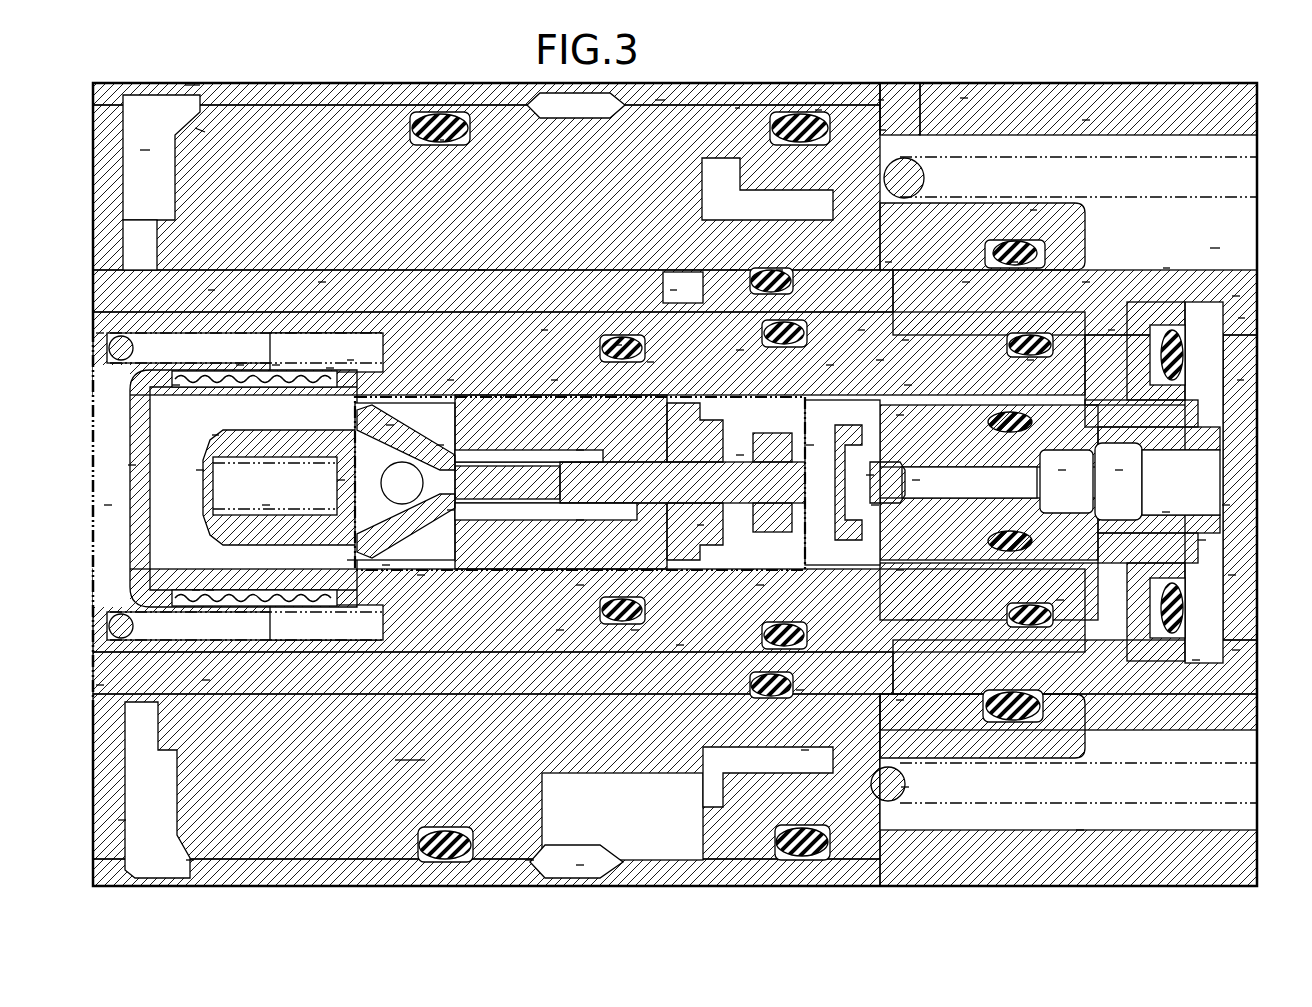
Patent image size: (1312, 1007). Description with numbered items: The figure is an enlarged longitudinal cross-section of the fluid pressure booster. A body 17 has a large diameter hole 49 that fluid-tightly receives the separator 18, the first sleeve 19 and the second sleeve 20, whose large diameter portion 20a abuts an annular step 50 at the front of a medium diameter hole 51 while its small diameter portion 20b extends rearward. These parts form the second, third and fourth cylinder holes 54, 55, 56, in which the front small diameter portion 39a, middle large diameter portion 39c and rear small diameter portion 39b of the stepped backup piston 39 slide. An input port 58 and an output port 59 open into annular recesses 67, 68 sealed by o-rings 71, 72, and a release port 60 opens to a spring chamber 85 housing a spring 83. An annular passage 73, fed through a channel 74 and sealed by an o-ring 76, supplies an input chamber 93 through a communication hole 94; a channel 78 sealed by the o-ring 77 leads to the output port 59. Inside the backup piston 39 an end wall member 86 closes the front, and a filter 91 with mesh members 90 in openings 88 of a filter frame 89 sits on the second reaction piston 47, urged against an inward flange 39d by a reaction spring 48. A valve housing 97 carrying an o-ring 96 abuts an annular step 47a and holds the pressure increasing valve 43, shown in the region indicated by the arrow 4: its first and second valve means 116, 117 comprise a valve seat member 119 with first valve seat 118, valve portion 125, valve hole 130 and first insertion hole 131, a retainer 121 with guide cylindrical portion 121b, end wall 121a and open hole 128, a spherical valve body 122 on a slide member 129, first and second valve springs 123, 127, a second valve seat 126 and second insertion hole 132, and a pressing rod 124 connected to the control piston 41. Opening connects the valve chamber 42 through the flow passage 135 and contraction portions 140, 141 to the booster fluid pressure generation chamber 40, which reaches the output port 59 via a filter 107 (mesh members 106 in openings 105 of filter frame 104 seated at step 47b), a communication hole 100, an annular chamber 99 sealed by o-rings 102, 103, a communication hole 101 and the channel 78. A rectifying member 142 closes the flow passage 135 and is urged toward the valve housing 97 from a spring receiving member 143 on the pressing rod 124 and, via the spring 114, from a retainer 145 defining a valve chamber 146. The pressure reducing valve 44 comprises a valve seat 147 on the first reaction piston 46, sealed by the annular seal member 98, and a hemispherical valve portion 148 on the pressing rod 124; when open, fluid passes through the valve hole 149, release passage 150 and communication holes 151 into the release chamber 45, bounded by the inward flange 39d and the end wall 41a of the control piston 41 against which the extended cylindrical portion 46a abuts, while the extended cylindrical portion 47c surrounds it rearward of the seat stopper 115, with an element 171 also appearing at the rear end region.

The section view direction arrow 4 is at (325, 560).
The body 17 is at (1080, 830).
The separator 18 is at (122, 820).
The first sleeve 19 is at (200, 130).
The second sleeve 20 is at (882, 130).
The large diameter portion 20a is at (737, 108).
The small diameter portion 20b is at (1033, 210).
The backup piston 39 is at (1167, 270).
The front small diameter portion 39a is at (210, 290).
The rear small diameter portion 39b is at (966, 282).
The middle large diameter portion 39c is at (733, 270).
The inward flange 39d is at (1236, 296).
The booster fluid pressure generation chamber 40 is at (880, 360).
The control piston 41 is at (1196, 660).
The end wall 41a is at (1236, 650).
The valve chamber 42 is at (390, 425).
The pressure increasing valve 43 is at (459, 752).
The pressure reducing valve 44 is at (875, 505).
The release chamber 45 is at (1240, 380).
The first reaction piston 46 is at (1060, 600).
The extended cylindrical portion 46a is at (1180, 500).
The second reaction piston 47 is at (1111, 330).
The annular step 47a is at (680, 645).
The annular step 47b is at (910, 620).
The extended cylindrical portion 47c is at (1117, 484).
The reaction spring 48 is at (98, 333).
The large diameter hole 49 is at (660, 100).
The annular step 50 is at (880, 100).
The medium diameter hole 51 is at (1085, 120).
The second cylinder hole 54 is at (98, 685).
The third cylinder hole 55 is at (320, 282).
The fourth cylinder hole 56 is at (1086, 282).
The input port 58 is at (175, 85).
The output port 59 is at (580, 865).
The release port 60 is at (965, 98).
The annular recess 67 is at (190, 860).
The annular recess 68 is at (530, 860).
The o-ring 71 is at (440, 142).
The o-ring 72 is at (818, 110).
The annular passage 73 is at (480, 270).
The channel 74 is at (160, 176).
The o-ring 76 is at (779, 270).
The o-ring 77 is at (1015, 262).
The channel 78 is at (805, 750).
The spring 83 is at (905, 787).
The spring chamber 85 is at (1232, 249).
The end wall member 86 is at (205, 680).
The openings 88 is at (175, 385).
The filter frame 89 is at (130, 465).
The mesh members 90 is at (195, 590).
The filter 91 is at (275, 368).
The input chamber 93 is at (108, 505).
The communication hole 94 is at (672, 290).
The o-ring 96 is at (618, 345).
The valve housing 97 is at (544, 330).
The annular seal member 98 is at (1060, 483).
The annular chamber 99 is at (905, 340).
The communication hole 100 is at (861, 330).
The communication hole 101 is at (888, 262).
The o-ring 102 is at (740, 350).
The o-ring 103 is at (1030, 360).
The filter frame 104 is at (760, 585).
The openings 105 is at (800, 690).
The mesh members 106 is at (900, 700).
The filter 107 is at (906, 385).
The spring 114 is at (900, 415).
The seat stopper 115 is at (1241, 318).
The first valve means 116 is at (386, 565).
The second valve means 117 is at (421, 575).
The first valve seat 118 is at (340, 480).
The valve seat member 119 is at (580, 585).
The retainer 121 is at (350, 360).
The end wall 121a is at (210, 590).
The guide cylindrical portion 121b is at (240, 365).
The valve body 122 is at (440, 445).
The first valve spring 123 is at (215, 435).
The pressing rod 124 is at (740, 455).
The valve portion 125 is at (450, 380).
The second valve seat 126 is at (450, 510).
The second valve spring 127 is at (330, 368).
The open hole 128 is at (200, 470).
The slide member 129 is at (265, 505).
The valve hole 130 is at (350, 560).
The first insertion hole 131 is at (580, 520).
The second insertion hole 132 is at (580, 450).
The flow passage 135 is at (650, 362).
The contraction portion 140 is at (563, 362).
The contraction portion 141 is at (560, 630).
The rectifying member 142 is at (635, 630).
The spring receiving member 143 is at (700, 525).
The retainer 145 is at (830, 365).
The valve chamber 146 is at (870, 475).
The valve seat 147 is at (810, 445).
The valve portion 148 is at (900, 570).
The valve hole 149 is at (915, 480).
The release passage 150 is at (1226, 505).
The communication holes 151 is at (1202, 540).
The seal holder 171 is at (1232, 575).